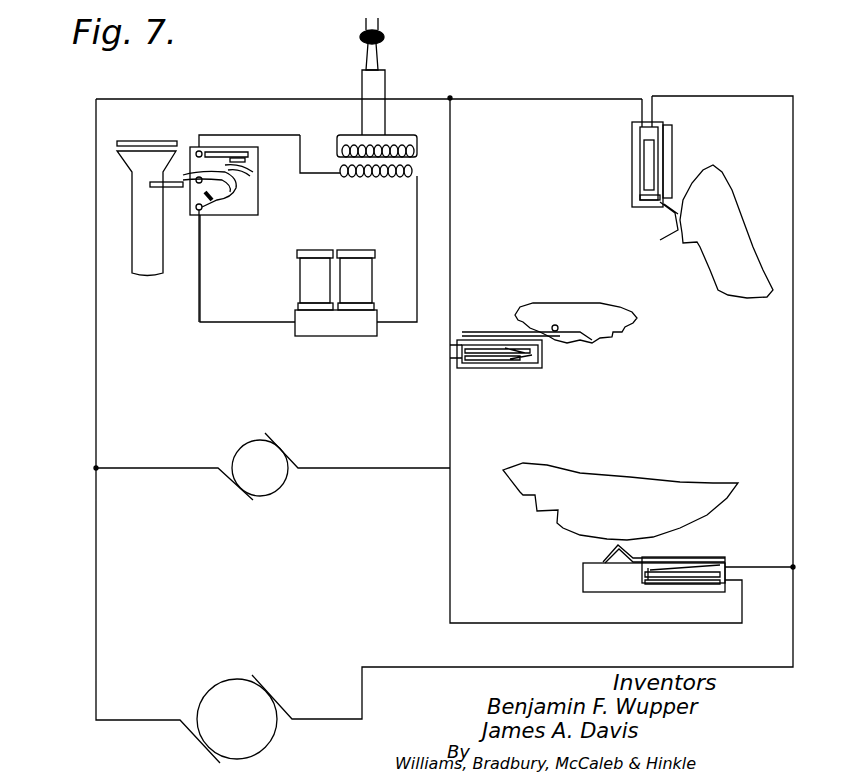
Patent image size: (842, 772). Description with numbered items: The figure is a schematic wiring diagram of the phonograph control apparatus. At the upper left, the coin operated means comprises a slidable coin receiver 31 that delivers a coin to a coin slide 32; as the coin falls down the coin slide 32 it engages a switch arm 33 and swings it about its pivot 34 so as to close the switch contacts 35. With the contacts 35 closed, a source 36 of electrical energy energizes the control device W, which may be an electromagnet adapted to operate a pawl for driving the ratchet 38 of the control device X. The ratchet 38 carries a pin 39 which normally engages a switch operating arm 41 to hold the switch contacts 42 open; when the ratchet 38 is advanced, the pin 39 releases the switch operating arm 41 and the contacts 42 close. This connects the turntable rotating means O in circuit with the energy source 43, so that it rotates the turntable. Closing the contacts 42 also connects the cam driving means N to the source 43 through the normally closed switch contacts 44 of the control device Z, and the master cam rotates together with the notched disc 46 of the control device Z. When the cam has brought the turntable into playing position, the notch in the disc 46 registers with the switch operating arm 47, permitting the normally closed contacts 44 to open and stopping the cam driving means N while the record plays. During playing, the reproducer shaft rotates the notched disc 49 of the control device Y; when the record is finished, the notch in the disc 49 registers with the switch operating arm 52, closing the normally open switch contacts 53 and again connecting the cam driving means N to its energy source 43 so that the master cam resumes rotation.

The slidable coin receiver 31 is at (117, 143).
The coin slide 32 is at (132, 244).
The switch arm 33 is at (150, 184).
The pivot 34 is at (220, 197).
The switch contacts 35 is at (255, 170).
The source of electrical energy 36 is at (415, 162).
The source of electrical energy 43 is at (384, 40).
The switch contacts 53 is at (648, 172).
The switch operating arm 52 is at (664, 215).
The notched disc 49 is at (720, 293).
The pin 39 is at (555, 325).
The switch operating arm 41 is at (583, 330).
The ratchet 38 is at (636, 325).
The switch contacts 42 is at (505, 368).
The notched disc 46 is at (737, 488).
The switch operating arm 47 is at (638, 550).
The switch contacts 44 is at (672, 585).
The control device W is at (362, 340).
The control device X is at (500, 320).
The control device Y is at (683, 180).
The control device Z is at (693, 546).
The turntable rotating means O is at (246, 444).
The cam driving means N is at (237, 719).